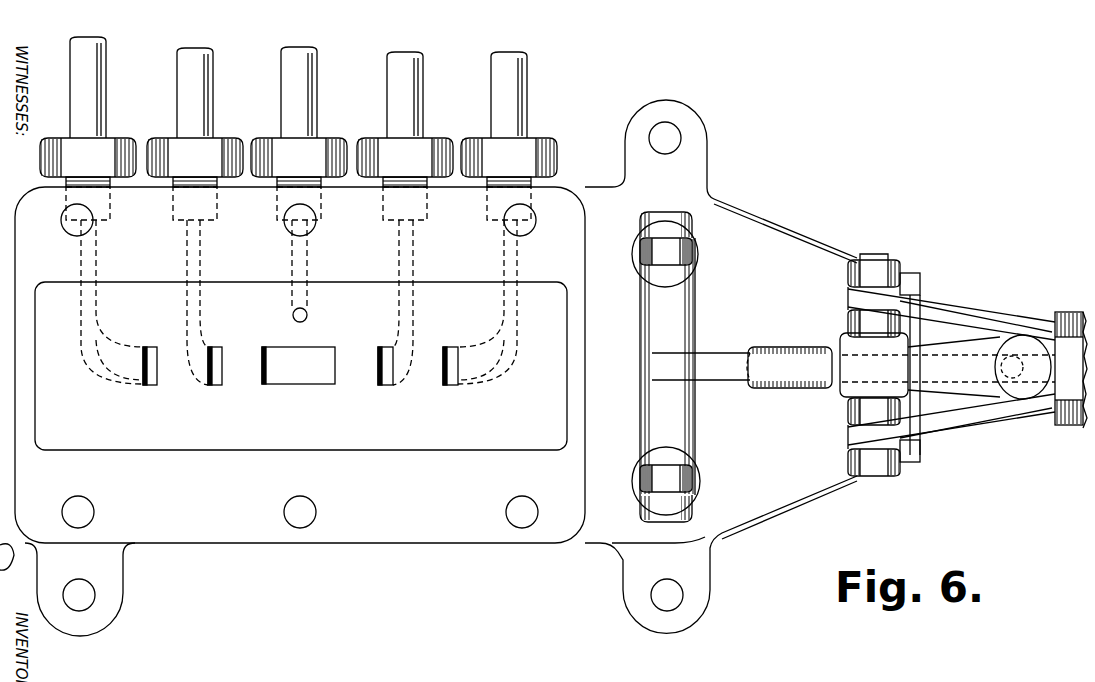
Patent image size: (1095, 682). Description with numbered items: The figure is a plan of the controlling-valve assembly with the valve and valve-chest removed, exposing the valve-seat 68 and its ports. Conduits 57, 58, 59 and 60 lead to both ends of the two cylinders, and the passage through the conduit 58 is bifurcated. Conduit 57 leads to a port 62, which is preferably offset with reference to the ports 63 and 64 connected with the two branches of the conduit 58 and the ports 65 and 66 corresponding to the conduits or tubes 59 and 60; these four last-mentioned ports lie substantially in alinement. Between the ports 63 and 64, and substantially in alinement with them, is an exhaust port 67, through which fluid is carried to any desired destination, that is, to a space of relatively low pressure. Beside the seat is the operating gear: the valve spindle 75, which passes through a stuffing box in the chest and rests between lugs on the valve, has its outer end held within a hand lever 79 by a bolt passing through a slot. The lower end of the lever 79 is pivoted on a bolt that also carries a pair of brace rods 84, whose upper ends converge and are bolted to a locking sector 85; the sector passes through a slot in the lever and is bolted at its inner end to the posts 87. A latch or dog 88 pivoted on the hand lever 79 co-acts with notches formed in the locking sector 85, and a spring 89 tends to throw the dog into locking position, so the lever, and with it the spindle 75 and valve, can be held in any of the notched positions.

The conduit 57 is at (300, 97).
The conduit 58 is at (195, 105).
The conduit 59 is at (517, 82).
The conduit 60 is at (88, 82).
The port 62 is at (308, 316).
The port 63 is at (218, 386).
The port 64 is at (386, 387).
The port 65 is at (452, 387).
The port 66 is at (152, 385).
The exhaust port 67 is at (295, 375).
The valve-seat 68 is at (340, 440).
The valve spindle 75 is at (780, 385).
The hand lever 79 is at (848, 363).
The brace rods 84 is at (937, 313).
The locking sector 85 is at (713, 363).
The posts 87 is at (668, 255).
The latch or dog 88 is at (1028, 345).
The spring 89 is at (968, 363).